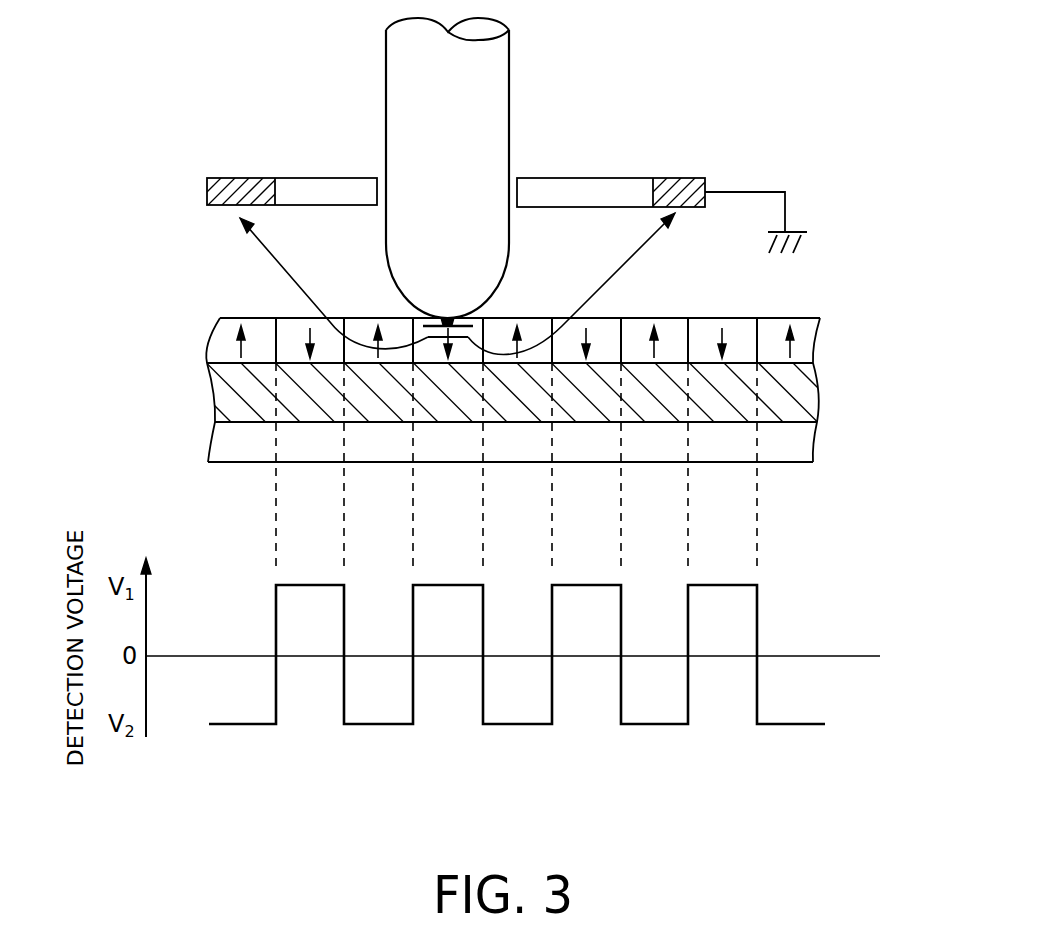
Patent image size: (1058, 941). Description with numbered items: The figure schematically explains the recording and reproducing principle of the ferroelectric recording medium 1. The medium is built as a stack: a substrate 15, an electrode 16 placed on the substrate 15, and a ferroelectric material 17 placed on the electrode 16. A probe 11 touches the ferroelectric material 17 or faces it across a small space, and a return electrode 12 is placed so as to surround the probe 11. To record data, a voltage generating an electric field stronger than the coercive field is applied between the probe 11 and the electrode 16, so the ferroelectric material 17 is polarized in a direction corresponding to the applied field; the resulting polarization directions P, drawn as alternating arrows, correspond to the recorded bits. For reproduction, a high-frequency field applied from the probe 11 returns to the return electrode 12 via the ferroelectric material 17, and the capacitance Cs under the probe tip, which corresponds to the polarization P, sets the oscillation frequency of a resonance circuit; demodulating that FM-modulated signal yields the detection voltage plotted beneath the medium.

The ferroelectric recording medium 1 is at (561, 390).
The probe 11 is at (509, 105).
The return electrode 12 is at (678, 178).
The substrate 15 is at (552, 447).
The electrode 16 is at (812, 395).
The ferroelectric material 17 is at (813, 342).
The capacitance Cs is at (478, 326).
The polarization direction P is at (800, 342).